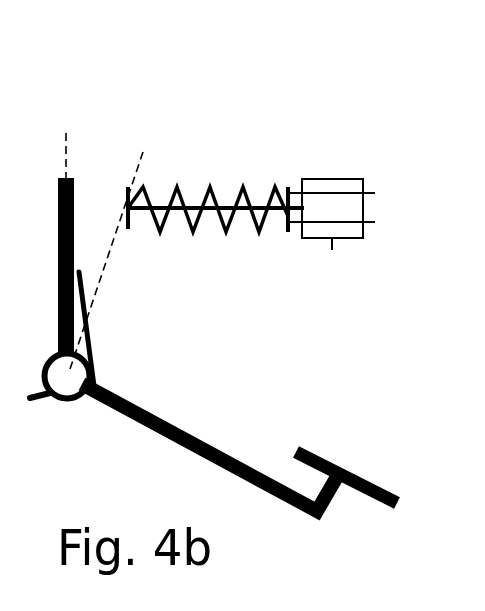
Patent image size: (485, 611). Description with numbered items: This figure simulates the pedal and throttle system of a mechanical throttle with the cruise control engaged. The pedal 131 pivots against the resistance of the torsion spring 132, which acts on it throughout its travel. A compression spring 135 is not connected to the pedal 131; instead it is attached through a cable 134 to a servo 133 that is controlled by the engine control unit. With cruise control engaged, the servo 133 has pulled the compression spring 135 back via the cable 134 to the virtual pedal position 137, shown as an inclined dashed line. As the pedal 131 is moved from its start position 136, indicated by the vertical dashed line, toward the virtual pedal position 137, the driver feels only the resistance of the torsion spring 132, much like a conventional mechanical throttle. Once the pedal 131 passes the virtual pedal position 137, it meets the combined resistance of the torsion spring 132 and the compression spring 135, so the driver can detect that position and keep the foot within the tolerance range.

The pedal 131 is at (188, 452).
The torsion spring 132 is at (92, 333).
The servo 133 is at (347, 240).
The cable 134 is at (210, 210).
The compression spring 135 is at (240, 189).
The start position 136 is at (67, 158).
The virtual pedal position 137 is at (136, 172).